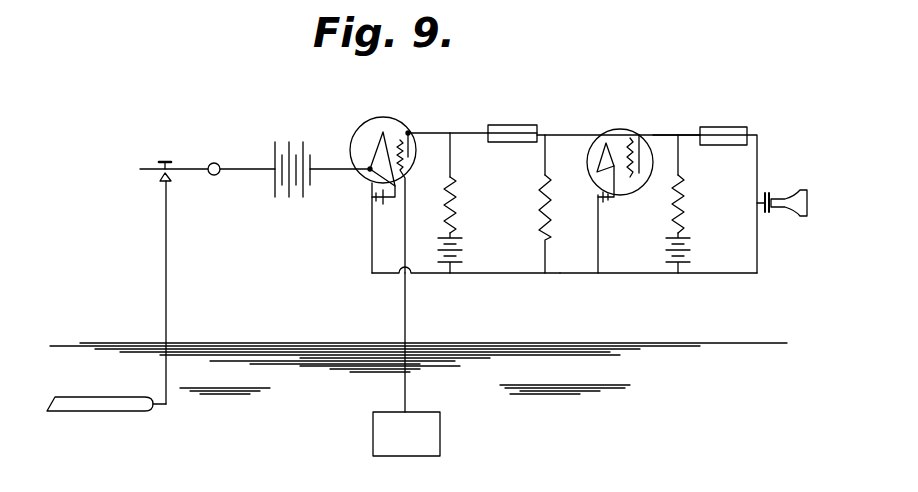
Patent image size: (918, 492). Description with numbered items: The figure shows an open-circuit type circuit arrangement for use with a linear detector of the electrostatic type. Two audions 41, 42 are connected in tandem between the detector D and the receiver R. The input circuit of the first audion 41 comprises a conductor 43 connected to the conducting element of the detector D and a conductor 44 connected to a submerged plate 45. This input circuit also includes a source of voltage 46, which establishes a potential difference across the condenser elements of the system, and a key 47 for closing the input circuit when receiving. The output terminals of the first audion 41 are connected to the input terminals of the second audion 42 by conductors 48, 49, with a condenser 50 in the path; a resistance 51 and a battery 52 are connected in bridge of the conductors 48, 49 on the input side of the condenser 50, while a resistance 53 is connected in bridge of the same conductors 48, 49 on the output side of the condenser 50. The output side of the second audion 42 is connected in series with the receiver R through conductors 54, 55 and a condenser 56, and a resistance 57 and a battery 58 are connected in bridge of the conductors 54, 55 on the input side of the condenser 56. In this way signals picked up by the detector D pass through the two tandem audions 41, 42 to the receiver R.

The audion 41 is at (376, 124).
The audion 42 is at (616, 128).
The conductor 43 is at (166, 248).
The conductor 44 is at (407, 312).
The submerged plate 45 is at (423, 432).
The source of voltage 46 is at (288, 197).
The key 47 is at (163, 160).
The conductor 48 is at (547, 130).
The conductor 49 is at (538, 276).
The condenser 50 is at (488, 122).
The resistance 51 is at (456, 200).
The battery 52 is at (464, 250).
The resistance 53 is at (552, 200).
The conductor 54 is at (667, 133).
The conductor 55 is at (703, 276).
The condenser 56 is at (745, 125).
The resistance 57 is at (684, 190).
The battery 58 is at (668, 252).
The receiver R is at (793, 215).
The detector D is at (88, 411).